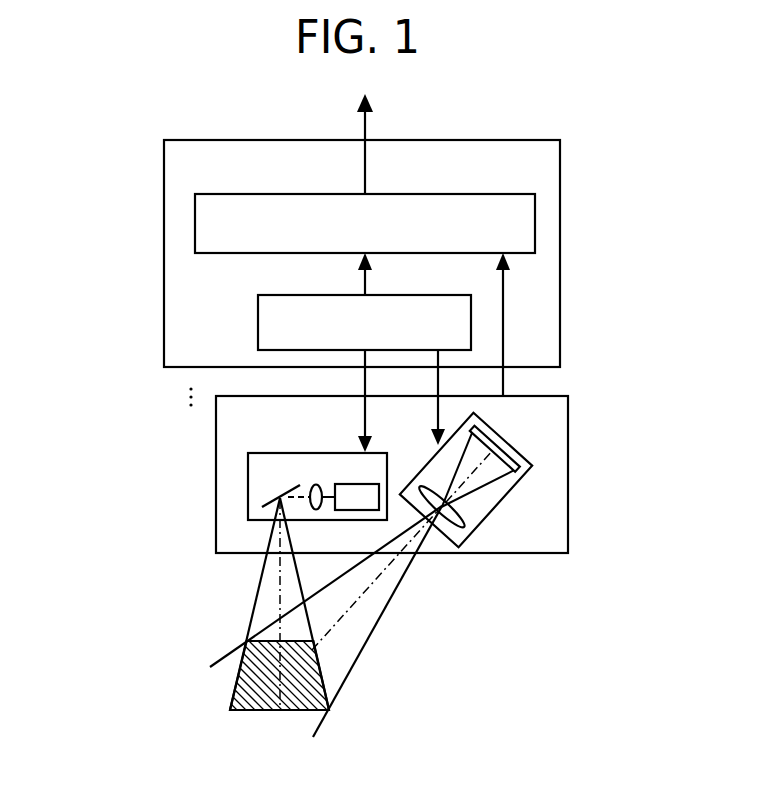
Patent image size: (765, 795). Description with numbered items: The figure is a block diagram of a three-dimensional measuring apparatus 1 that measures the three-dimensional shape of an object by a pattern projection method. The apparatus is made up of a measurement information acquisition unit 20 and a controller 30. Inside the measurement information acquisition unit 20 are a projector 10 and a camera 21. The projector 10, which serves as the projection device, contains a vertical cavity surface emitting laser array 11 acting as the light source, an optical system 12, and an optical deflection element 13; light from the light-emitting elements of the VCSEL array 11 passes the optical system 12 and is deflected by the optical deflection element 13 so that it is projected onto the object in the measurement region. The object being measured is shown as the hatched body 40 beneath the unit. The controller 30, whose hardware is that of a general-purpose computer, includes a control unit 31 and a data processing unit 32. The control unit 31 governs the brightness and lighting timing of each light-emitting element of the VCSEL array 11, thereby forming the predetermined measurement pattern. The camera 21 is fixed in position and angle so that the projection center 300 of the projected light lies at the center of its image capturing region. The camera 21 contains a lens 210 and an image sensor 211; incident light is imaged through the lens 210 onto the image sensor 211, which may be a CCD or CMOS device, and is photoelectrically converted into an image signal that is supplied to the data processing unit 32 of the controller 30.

The three-dimensional measuring apparatus 1 is at (86, 197).
The projector 10 is at (248, 487).
The vertical cavity surface emitting laser (VCSEL) array 11 is at (358, 484).
The optical system 12 is at (315, 485).
The optical deflection element 13 is at (280, 497).
The measurement information acquisition unit 20 is at (568, 408).
The camera 21 is at (502, 502).
The lens 210 is at (462, 525).
The image sensor 211 is at (520, 468).
The controller 30 is at (491, 140).
The control unit 31 is at (399, 295).
The data processing unit 32 is at (464, 194).
The projection center 300 is at (278, 628).
The measurement object 40 is at (280, 690).